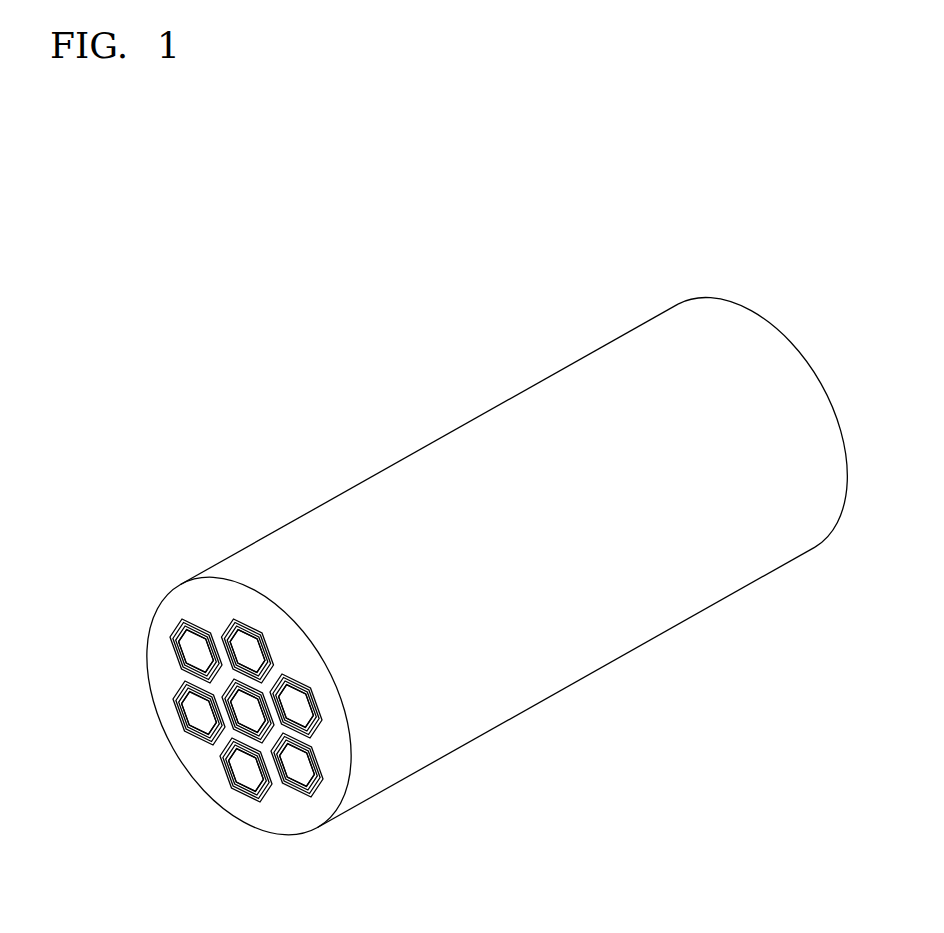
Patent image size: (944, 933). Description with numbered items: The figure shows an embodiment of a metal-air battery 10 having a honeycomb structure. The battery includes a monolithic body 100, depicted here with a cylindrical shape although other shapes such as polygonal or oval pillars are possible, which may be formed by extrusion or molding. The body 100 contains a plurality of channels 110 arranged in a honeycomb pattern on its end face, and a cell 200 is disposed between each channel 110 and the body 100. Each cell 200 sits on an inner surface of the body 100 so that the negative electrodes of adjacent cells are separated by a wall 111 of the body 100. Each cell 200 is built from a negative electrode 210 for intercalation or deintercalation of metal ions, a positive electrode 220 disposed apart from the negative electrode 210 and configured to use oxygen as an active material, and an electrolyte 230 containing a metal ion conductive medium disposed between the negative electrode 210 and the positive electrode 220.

The metal-air battery 10 is at (786, 223).
The monolithic body 100 is at (427, 443).
The channel 110 is at (306, 777).
The wall 111 is at (276, 807).
The cell 200 is at (418, 827).
The negative electrode 210 is at (311, 794).
The positive electrode 220 is at (315, 803).
The electrolyte 230 is at (313, 799).